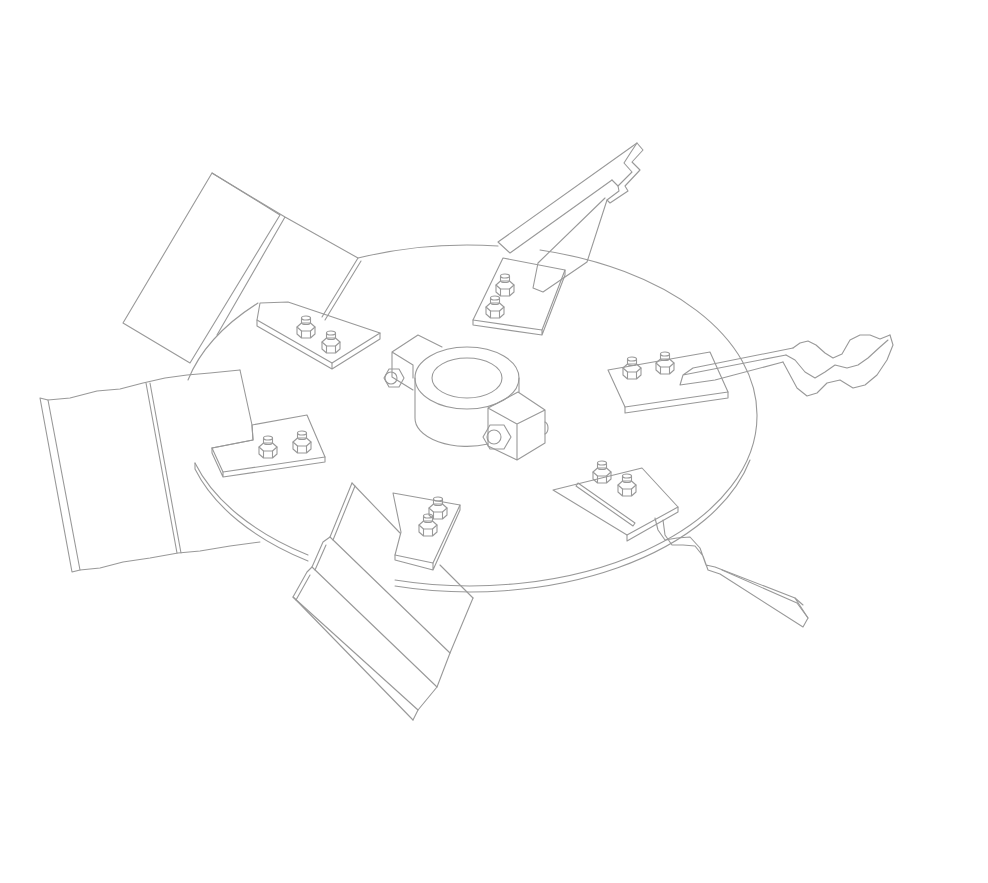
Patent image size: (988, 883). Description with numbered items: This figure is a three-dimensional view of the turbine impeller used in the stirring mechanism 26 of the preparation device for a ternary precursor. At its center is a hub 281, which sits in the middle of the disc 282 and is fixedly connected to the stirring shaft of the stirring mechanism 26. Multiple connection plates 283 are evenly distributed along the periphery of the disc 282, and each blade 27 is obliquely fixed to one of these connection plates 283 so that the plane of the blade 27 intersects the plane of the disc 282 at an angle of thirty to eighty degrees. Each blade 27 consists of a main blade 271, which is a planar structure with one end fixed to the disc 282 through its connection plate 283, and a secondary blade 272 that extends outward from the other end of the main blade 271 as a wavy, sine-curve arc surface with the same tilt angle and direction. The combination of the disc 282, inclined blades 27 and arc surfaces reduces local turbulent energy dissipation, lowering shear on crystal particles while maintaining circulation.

The stirring mechanism 26 is at (266, 93).
The blade 27 is at (302, 250).
The main blade 271 is at (573, 235).
The secondary blade 272 is at (609, 166).
The hub 281 is at (515, 373).
The disc 282 is at (562, 540).
The connection plate 283 is at (647, 498).